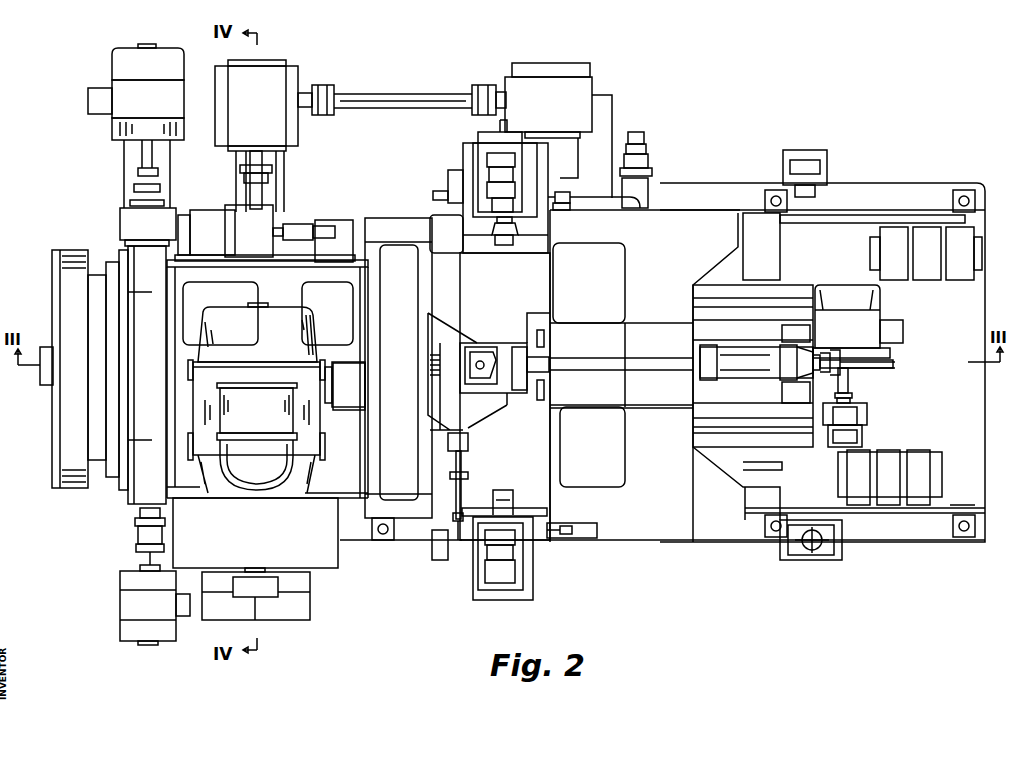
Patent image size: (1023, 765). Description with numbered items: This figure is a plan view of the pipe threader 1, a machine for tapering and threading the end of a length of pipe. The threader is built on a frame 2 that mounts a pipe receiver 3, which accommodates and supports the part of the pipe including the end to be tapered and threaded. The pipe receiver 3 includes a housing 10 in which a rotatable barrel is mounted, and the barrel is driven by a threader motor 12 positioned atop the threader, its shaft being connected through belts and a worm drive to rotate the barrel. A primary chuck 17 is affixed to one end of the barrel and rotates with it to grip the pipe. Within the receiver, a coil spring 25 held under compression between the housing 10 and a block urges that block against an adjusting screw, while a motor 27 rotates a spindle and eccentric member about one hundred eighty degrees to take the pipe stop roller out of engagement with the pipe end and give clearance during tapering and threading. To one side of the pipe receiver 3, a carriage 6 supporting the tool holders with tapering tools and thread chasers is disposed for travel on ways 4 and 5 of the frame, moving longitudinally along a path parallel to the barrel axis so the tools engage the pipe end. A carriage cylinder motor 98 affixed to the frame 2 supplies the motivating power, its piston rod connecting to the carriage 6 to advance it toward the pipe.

The pipe threader 1 is at (388, 176).
The frame 2 is at (992, 470).
The pipe receiver 3 is at (142, 260).
The way 4 is at (748, 484).
The way 5 is at (755, 226).
The carriage 6 is at (537, 473).
The housing 10 is at (302, 270).
The threader motor 12 is at (290, 486).
The primary chuck 17 is at (52, 272).
The coil spring 25 is at (430, 370).
The motor 27 is at (481, 345).
The carriage cylinder motor 98 is at (712, 378).